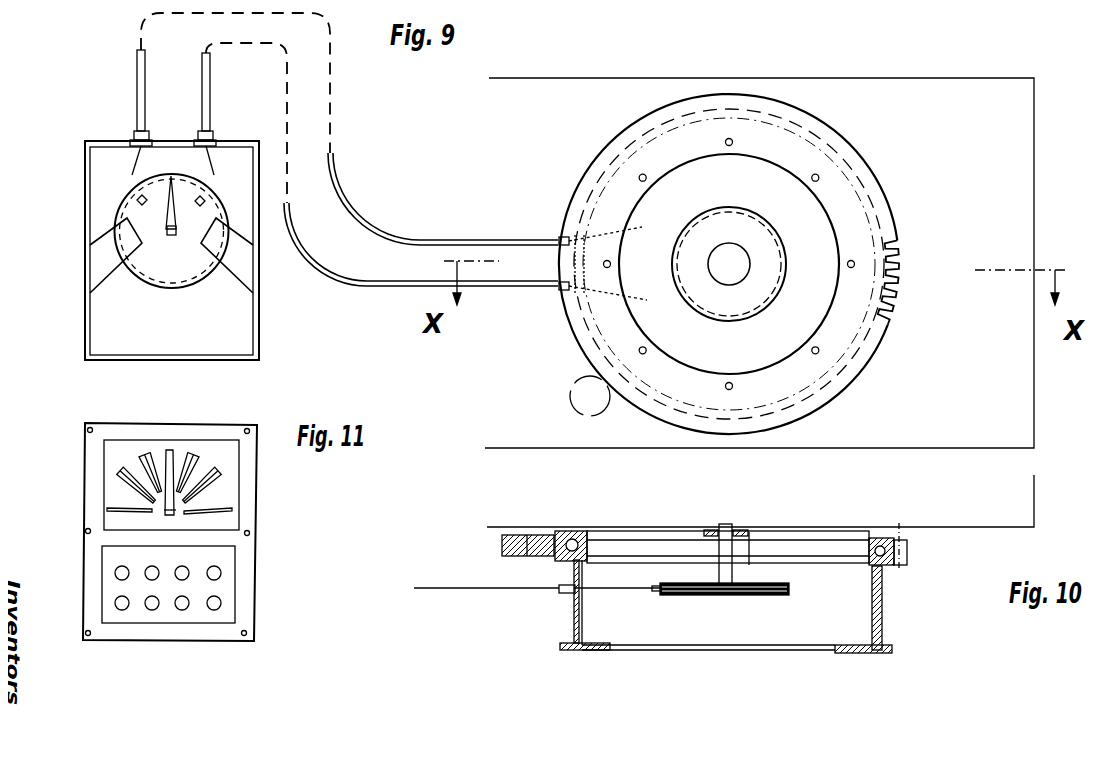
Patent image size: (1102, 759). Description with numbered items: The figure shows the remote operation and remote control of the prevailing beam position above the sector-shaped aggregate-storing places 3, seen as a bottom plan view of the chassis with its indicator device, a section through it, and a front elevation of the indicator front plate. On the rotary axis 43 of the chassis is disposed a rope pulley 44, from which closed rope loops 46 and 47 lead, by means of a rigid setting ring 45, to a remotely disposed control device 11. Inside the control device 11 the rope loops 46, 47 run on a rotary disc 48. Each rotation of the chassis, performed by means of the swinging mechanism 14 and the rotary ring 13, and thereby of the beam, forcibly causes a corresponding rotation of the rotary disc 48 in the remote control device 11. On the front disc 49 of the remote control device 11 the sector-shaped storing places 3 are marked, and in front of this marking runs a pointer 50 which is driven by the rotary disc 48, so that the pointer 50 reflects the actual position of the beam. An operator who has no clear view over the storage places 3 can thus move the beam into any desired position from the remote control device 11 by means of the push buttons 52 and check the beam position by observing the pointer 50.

In FIG. 11, the sector-shaped aggregate-storing places 3 is at (115, 492).
In FIG. 9, the remote control device 11 is at (85, 332).
In FIG. 11, the remote control device 11 is at (125, 637).
In FIG. 9, the rotary ring 13 is at (853, 163).
In FIG. 10, the rotary ring 13 is at (573, 537).
In FIG. 9, the swinging mechanism 14 is at (570, 390).
In FIG. 10, the swinging mechanism 14 is at (510, 540).
In FIG. 9, the rotary axis 43 is at (737, 253).
In FIG. 9, the rope pulley 44 is at (763, 290).
In FIG. 10, the rope pulley 44 is at (753, 596).
In FIG. 9, the rigid setting ring 45 is at (622, 158).
In FIG. 10, the rigid setting ring 45 is at (570, 607).
In FIG. 9, the closed rope loop 46 is at (128, 172).
In FIG. 10, the closed rope loop 46 is at (632, 580).
In FIG. 9, the closed rope loop 47 is at (207, 163).
In FIG. 10, the closed rope loop 47 is at (643, 588).
In FIG. 9, the rotary disc 48 is at (188, 262).
In FIG. 11, the front disc 49 is at (238, 497).
In FIG. 9, the pointer 50 is at (153, 246).
In FIG. 11, the pointer 50 is at (168, 452).
In FIG. 11, the push buttons 52 is at (220, 568).